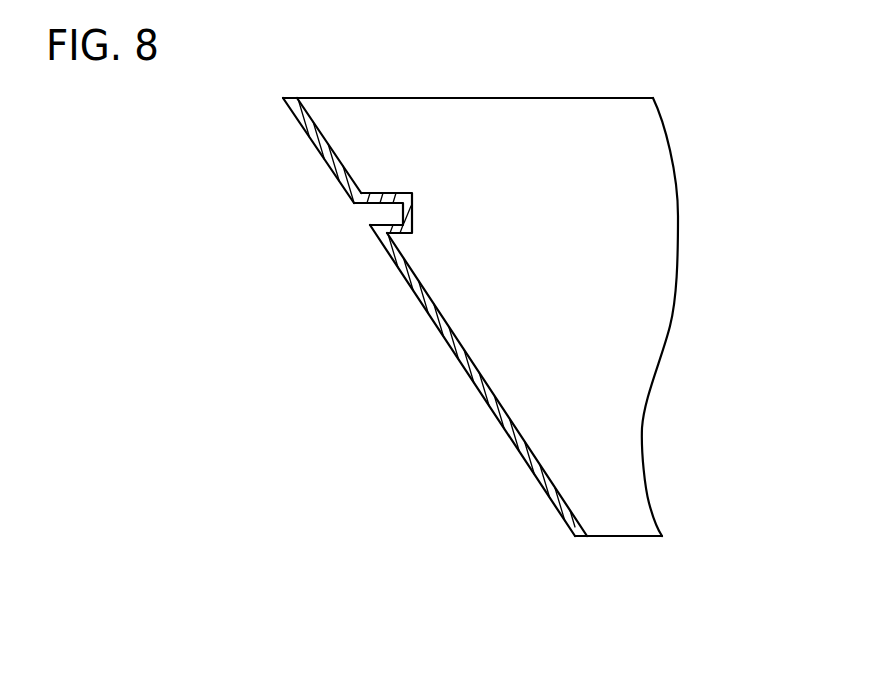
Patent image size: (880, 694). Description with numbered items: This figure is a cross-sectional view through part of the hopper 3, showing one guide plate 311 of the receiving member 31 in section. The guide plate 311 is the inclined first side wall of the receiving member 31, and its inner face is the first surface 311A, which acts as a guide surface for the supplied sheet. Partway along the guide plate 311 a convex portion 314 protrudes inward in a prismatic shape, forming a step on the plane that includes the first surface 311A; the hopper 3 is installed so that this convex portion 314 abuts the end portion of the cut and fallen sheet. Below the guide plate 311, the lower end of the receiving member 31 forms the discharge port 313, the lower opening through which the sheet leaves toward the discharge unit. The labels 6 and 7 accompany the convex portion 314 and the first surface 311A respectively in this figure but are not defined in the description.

The hopper 3 is at (446, 321).
The receiving member 31 is at (438, 321).
The guide plate 311 is at (312, 131).
The first surface 311A is at (478, 380).
The discharge port 313 is at (631, 528).
The convex portion 314 is at (397, 139).
The engagement portion 6 is at (374, 185).
The wall portion 7 is at (518, 439).